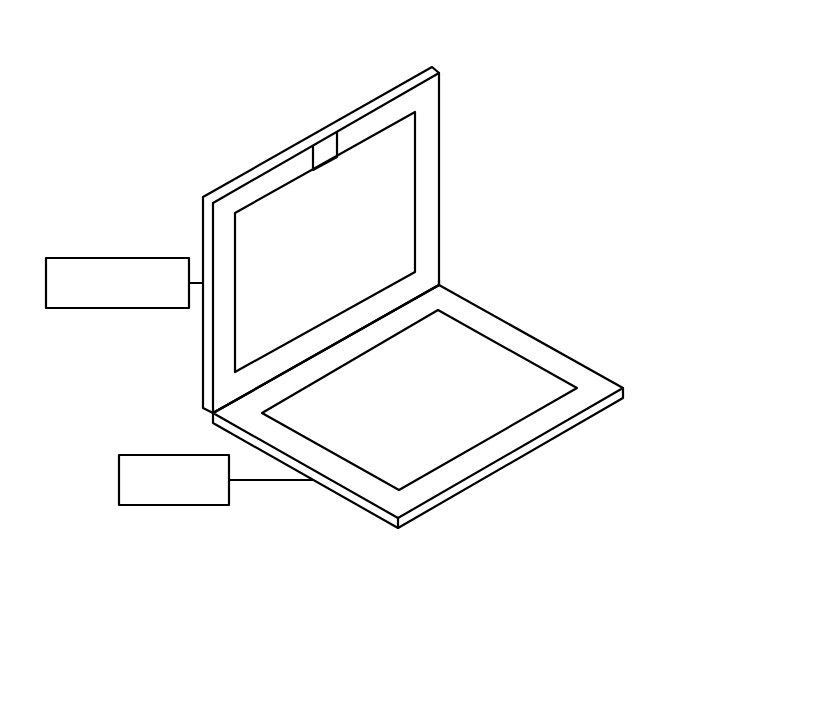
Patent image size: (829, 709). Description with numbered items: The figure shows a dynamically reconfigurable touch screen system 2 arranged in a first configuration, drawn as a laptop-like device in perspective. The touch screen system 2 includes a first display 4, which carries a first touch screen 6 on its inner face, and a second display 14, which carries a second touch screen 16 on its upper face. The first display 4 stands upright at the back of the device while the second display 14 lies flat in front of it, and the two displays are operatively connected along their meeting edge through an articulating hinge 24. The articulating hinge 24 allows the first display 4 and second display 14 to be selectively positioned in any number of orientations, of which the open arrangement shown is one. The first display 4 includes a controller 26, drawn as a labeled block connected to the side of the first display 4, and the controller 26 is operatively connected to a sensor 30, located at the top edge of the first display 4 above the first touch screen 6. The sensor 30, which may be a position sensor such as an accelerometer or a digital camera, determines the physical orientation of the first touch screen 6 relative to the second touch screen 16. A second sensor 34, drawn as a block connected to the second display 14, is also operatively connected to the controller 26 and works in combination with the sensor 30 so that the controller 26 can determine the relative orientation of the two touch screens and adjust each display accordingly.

The dynamically reconfigurable touch screen system 2 is at (568, 230).
The first display 4 is at (440, 150).
The first touch screen 6 is at (405, 203).
The second display 14 is at (580, 362).
The second touch screen 16 is at (495, 357).
The articulating hinge 24 is at (447, 283).
The controller 26 is at (118, 258).
The sensor 30 is at (327, 143).
The second sensor 34 is at (155, 455).